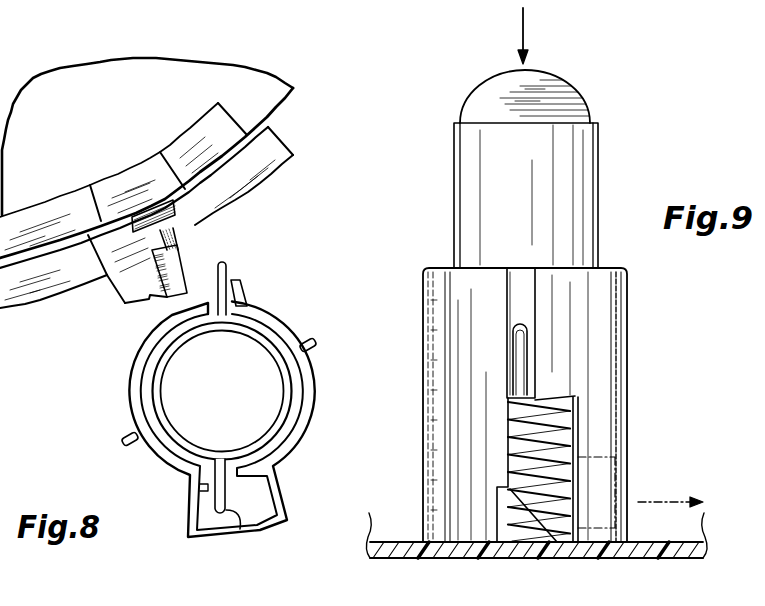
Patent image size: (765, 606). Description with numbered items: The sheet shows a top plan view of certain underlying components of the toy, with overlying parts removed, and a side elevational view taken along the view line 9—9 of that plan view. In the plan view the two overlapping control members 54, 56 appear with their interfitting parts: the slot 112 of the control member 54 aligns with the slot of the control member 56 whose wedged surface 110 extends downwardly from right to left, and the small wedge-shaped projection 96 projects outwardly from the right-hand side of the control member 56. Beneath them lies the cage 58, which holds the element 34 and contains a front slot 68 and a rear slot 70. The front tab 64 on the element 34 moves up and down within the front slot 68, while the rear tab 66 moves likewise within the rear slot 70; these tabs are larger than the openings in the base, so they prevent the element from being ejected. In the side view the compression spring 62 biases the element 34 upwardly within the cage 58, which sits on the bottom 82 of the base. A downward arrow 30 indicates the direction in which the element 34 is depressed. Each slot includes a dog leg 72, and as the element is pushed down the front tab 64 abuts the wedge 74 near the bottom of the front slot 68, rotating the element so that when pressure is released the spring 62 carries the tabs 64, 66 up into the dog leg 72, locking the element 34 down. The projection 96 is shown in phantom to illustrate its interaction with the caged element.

In FIG. 8, the view line 9— 9 is at (263, 223).
In FIG. 9, the applied force arrow 30 is at (531, 32).
In FIG. 9, the element 34 is at (580, 140).
In FIG. 8, the control member 54 is at (127, 65).
In FIG. 8, the control member 56 is at (2, 312).
In FIG. 8, the cage 58 is at (307, 392).
In FIG. 9, the cage 58 is at (603, 373).
In FIG. 9, the compression spring 62 is at (563, 450).
In FIG. 8, the front tab 64 is at (228, 268).
In FIG. 9, the front tab 64 is at (520, 359).
In FIG. 8, the rear tab 66 is at (230, 537).
In FIG. 8, the front slot 68 is at (238, 307).
In FIG. 9, the front slot 68 is at (528, 320).
In FIG. 8, the rear slot 70 is at (210, 487).
In FIG. 9, the dog leg 72 is at (578, 425).
In FIG. 9, the wedge 74 is at (579, 410).
In FIG. 9, the bottom 82 is at (370, 560).
In FIG. 8, the wedge-shaped projection 96 is at (130, 297).
In FIG. 8, the wedged surface 110 is at (207, 207).
In FIG. 8, the slot 112 is at (127, 168).